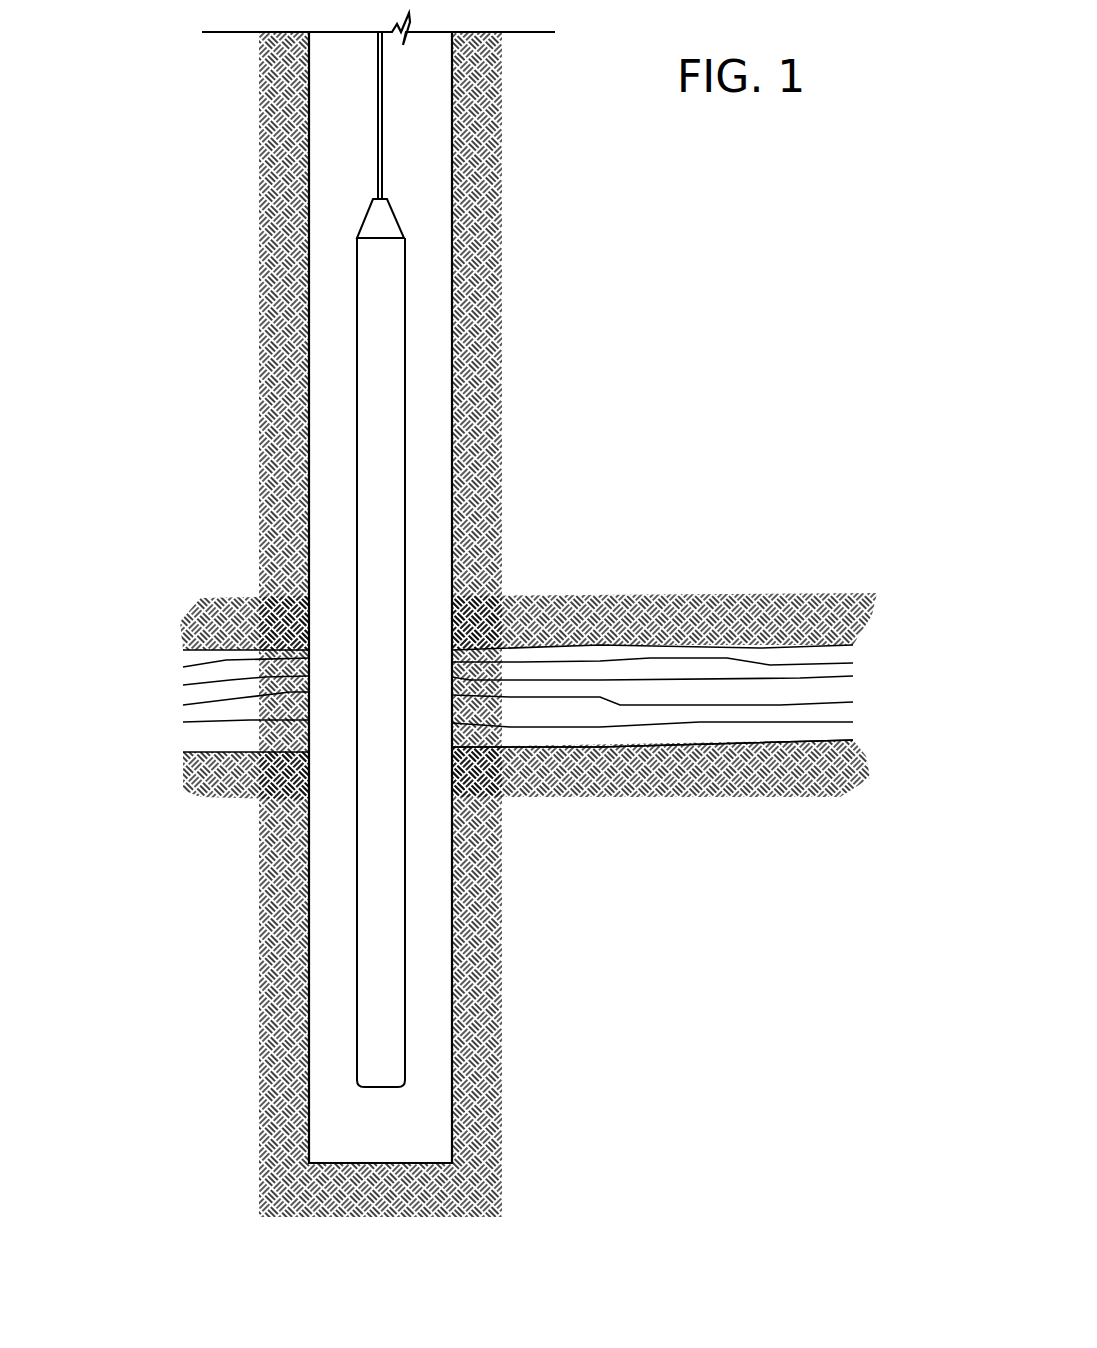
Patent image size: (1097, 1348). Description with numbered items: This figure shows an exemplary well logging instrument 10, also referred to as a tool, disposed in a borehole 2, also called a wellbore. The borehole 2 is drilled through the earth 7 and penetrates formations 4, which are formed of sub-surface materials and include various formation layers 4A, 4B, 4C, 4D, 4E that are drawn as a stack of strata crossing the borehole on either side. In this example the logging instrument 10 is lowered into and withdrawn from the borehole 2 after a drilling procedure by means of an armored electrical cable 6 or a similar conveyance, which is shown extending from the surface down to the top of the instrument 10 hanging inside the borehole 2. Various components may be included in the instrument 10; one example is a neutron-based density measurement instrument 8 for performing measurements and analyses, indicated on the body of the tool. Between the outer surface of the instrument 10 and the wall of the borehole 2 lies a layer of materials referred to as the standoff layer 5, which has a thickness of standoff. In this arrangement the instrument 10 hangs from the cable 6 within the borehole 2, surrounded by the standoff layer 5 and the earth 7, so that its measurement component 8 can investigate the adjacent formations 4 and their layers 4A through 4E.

The borehole 2 is at (423, 112).
The formations 4 is at (172, 688).
The formation layer 4A is at (847, 652).
The formation layer 4B is at (838, 670).
The formation layer 4C is at (838, 690).
The formation layer 4D is at (845, 715).
The formation layer 4E is at (847, 732).
The standoff layer 5 is at (333, 993).
The armored electrical cable 6 is at (378, 134).
The earth 7 is at (485, 1097).
The neutron-based density measurement instrument 8 is at (380, 598).
The well logging instrument 10 is at (430, 319).